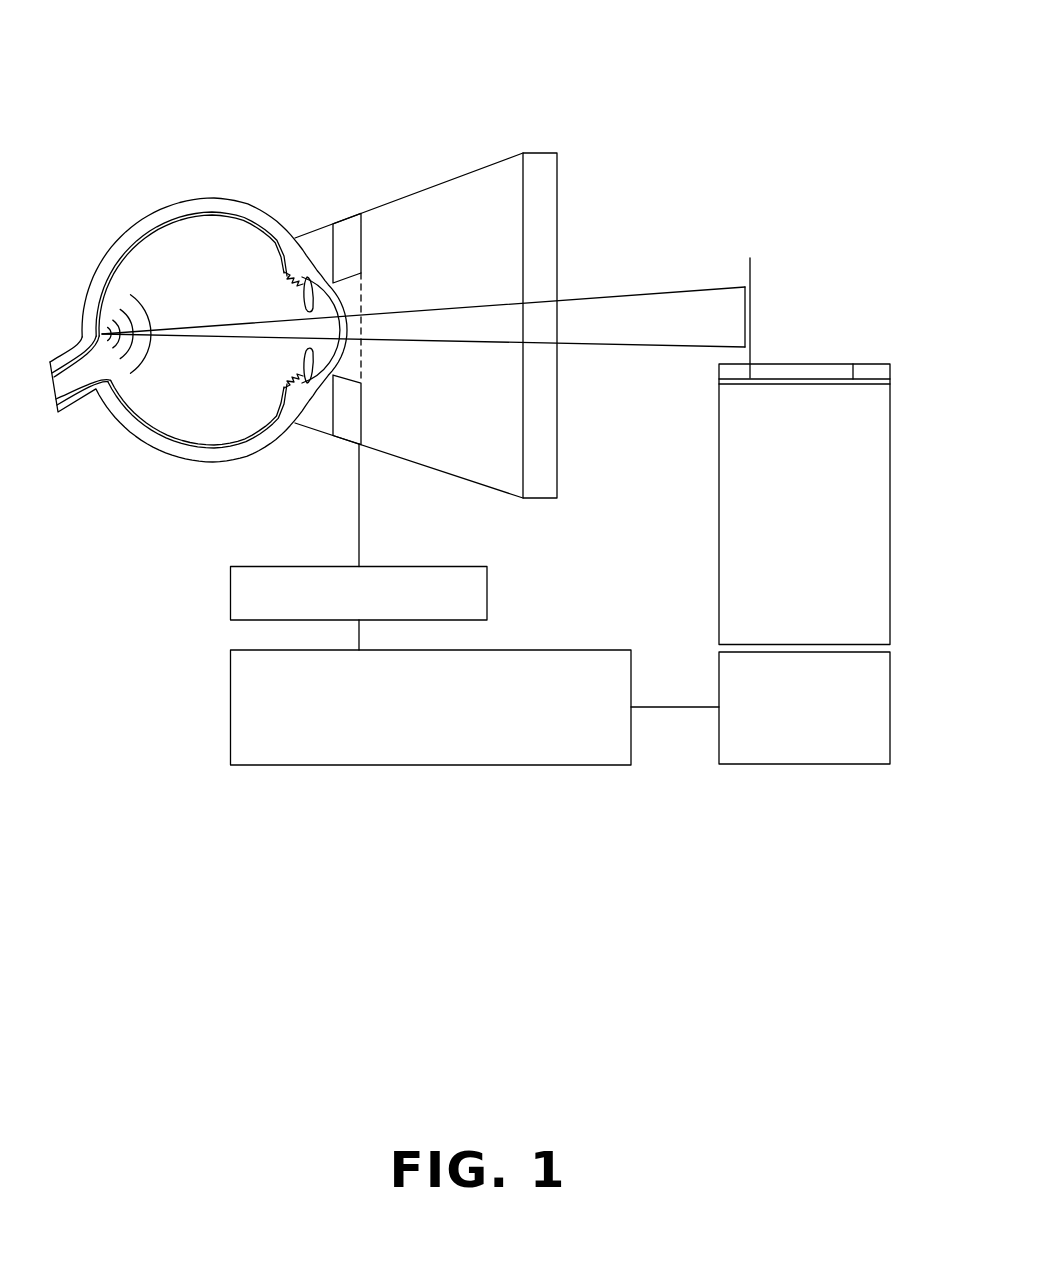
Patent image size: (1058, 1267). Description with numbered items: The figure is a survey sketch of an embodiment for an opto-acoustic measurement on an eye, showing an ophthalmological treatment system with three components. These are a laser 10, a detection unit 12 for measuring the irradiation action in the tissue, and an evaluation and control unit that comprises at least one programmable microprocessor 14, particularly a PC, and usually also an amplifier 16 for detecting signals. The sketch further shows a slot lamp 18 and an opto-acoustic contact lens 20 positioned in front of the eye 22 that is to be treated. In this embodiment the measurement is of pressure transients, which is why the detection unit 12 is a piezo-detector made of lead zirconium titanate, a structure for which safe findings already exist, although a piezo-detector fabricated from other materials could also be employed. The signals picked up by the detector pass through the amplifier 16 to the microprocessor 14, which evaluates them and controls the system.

The laser 10 is at (890, 703).
The detection unit 12 is at (345, 440).
The programmable microprocessor 14 is at (230, 702).
The amplifier 16 is at (230, 595).
The slot lamp 18 is at (890, 529).
The opto-acoustic contact lens 20 is at (521, 150).
The eye 22 is at (129, 228).